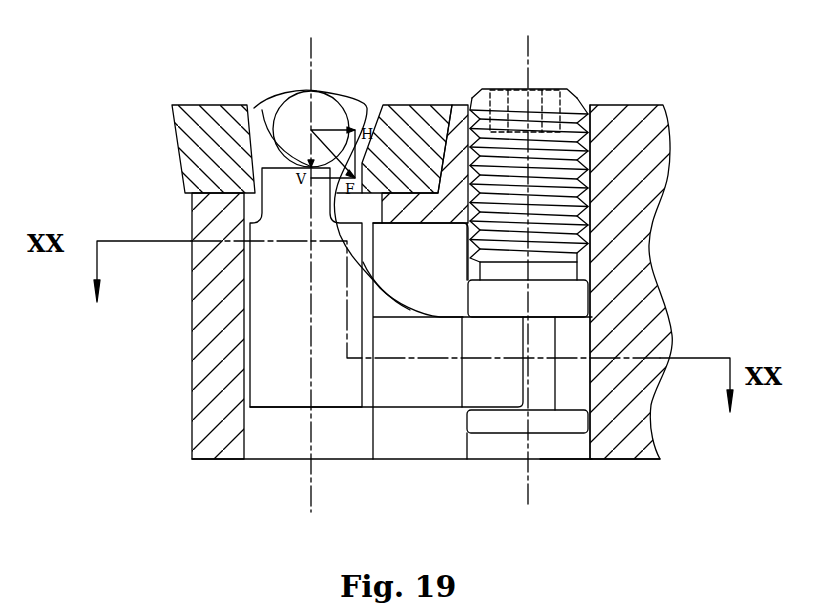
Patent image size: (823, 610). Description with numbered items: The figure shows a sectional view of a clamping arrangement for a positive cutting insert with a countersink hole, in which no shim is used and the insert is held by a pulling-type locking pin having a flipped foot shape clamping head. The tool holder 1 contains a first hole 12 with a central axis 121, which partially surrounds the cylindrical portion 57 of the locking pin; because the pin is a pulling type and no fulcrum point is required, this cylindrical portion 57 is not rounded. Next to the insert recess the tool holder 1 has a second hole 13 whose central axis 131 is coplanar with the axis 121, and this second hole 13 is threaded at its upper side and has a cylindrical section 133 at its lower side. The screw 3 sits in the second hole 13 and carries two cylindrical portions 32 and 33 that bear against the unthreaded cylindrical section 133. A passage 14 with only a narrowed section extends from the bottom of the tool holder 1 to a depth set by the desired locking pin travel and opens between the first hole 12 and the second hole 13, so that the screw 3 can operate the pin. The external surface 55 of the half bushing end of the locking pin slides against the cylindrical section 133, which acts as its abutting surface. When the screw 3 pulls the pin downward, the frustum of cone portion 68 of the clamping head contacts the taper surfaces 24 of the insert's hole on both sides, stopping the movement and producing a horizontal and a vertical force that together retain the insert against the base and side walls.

The tool holder 1 is at (203, 225).
The screw 3 is at (575, 95).
The first hole 12 is at (257, 436).
The second hole 13 is at (544, 447).
The passage 14 is at (416, 440).
The taper surfaces 24 is at (266, 133).
The cylindrical portion 32 is at (573, 298).
The cylindrical portion 33 is at (573, 421).
The external surface 55 is at (497, 388).
The cylindrical portion 57 is at (265, 350).
The frustum of cone portion 68 is at (267, 148).
The central axis 121 is at (311, 50).
The central axis 131 is at (529, 47).
The cylindrical section 133 is at (590, 448).